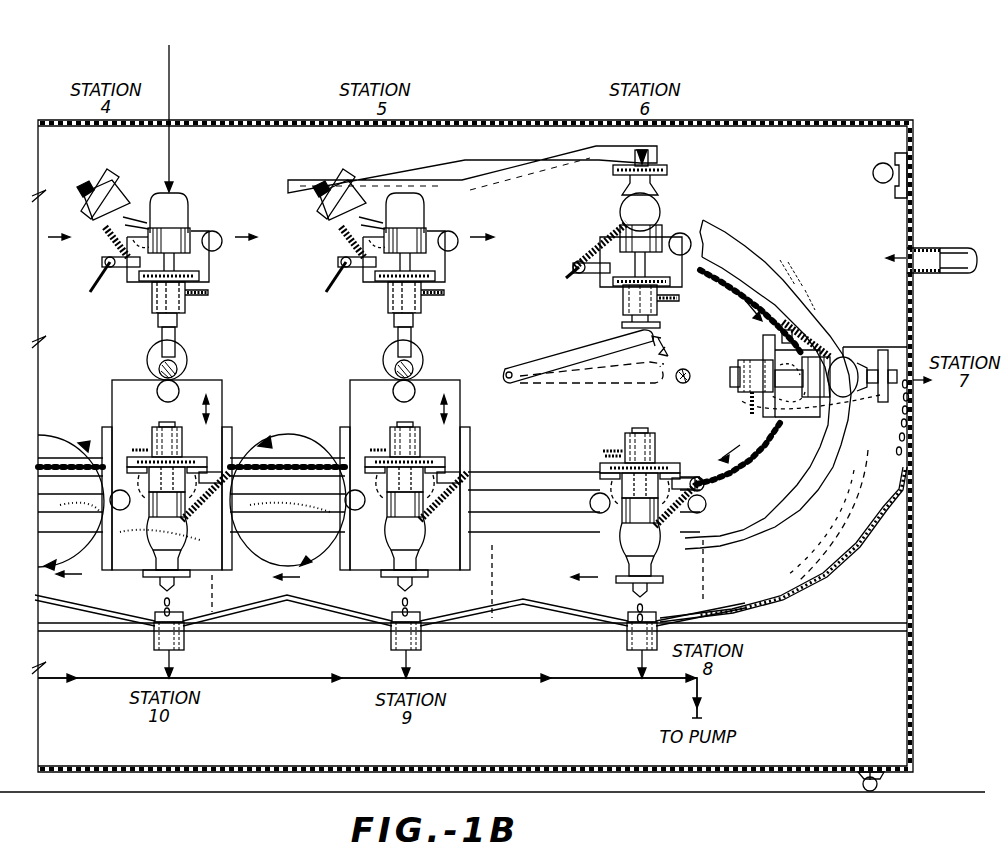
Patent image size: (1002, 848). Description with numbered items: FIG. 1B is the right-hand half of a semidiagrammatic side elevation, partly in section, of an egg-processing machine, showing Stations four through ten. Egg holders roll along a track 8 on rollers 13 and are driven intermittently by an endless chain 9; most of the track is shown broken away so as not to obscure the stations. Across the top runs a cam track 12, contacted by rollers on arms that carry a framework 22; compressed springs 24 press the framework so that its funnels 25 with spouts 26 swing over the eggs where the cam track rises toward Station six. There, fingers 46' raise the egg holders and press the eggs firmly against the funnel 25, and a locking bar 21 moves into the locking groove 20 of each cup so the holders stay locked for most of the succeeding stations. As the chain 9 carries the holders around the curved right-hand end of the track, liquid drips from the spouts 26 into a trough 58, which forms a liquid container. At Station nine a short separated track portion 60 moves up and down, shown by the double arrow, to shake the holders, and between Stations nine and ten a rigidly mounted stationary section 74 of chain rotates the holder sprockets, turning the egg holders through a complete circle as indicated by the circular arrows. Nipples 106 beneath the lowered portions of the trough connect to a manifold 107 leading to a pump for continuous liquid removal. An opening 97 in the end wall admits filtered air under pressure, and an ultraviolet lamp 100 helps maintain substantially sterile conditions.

The cam track 12 is at (493, 176).
The framework 22 is at (661, 169).
The funnel 25 is at (657, 194).
The compressed spring 24 is at (625, 233).
The locking groove 20 is at (625, 301).
The locking bar 21 is at (664, 301).
The fingers 46' is at (583, 356).
The track 8 is at (727, 262).
The endless chain 9 is at (773, 434).
The rollers 13 is at (590, 505).
The stationary section of chain 74 is at (295, 478).
The separated track portion 60 is at (354, 477).
The trough 58 is at (818, 572).
The sterilizing ultraviolet lamp 100 is at (873, 176).
The opening 97 is at (928, 249).
The spout 26 is at (896, 370).
The manifold 107 is at (513, 679).
The nipple 106 is at (627, 649).